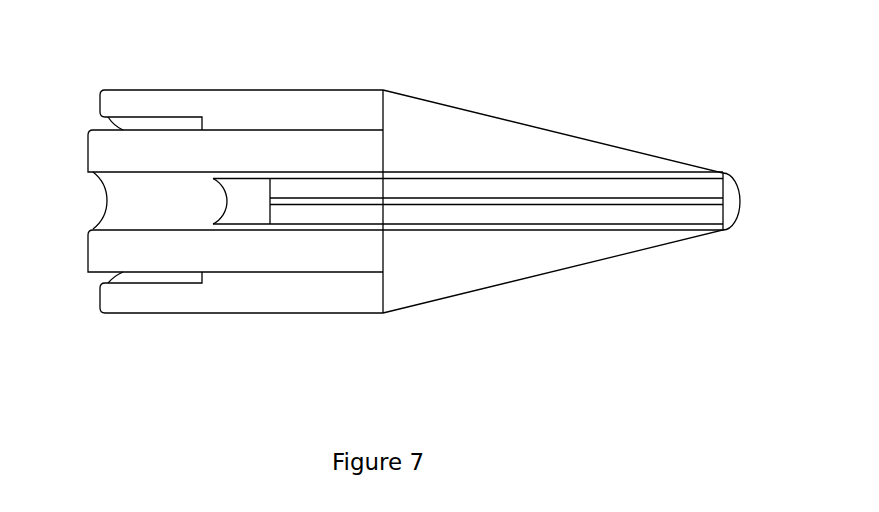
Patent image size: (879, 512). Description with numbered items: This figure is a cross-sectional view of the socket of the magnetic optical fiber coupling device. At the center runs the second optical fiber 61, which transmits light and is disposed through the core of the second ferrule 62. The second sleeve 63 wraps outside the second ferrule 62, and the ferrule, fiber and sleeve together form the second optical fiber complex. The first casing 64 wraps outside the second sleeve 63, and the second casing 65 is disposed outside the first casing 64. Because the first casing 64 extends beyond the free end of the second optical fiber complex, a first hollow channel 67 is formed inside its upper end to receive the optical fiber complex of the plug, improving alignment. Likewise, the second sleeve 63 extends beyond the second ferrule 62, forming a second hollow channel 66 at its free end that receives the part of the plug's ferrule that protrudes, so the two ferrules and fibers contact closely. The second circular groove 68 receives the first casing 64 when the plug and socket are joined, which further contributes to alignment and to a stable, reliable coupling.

The second optical fiber 61 is at (350, 203).
The second ferrule 62 is at (327, 212).
The second sleeve 63 is at (265, 170).
The first casing 64 is at (170, 247).
The second casing 65 is at (242, 112).
The second hollow channel 66 is at (247, 210).
The first hollow channel 67 is at (147, 201).
The second circular groove 68 is at (148, 125).